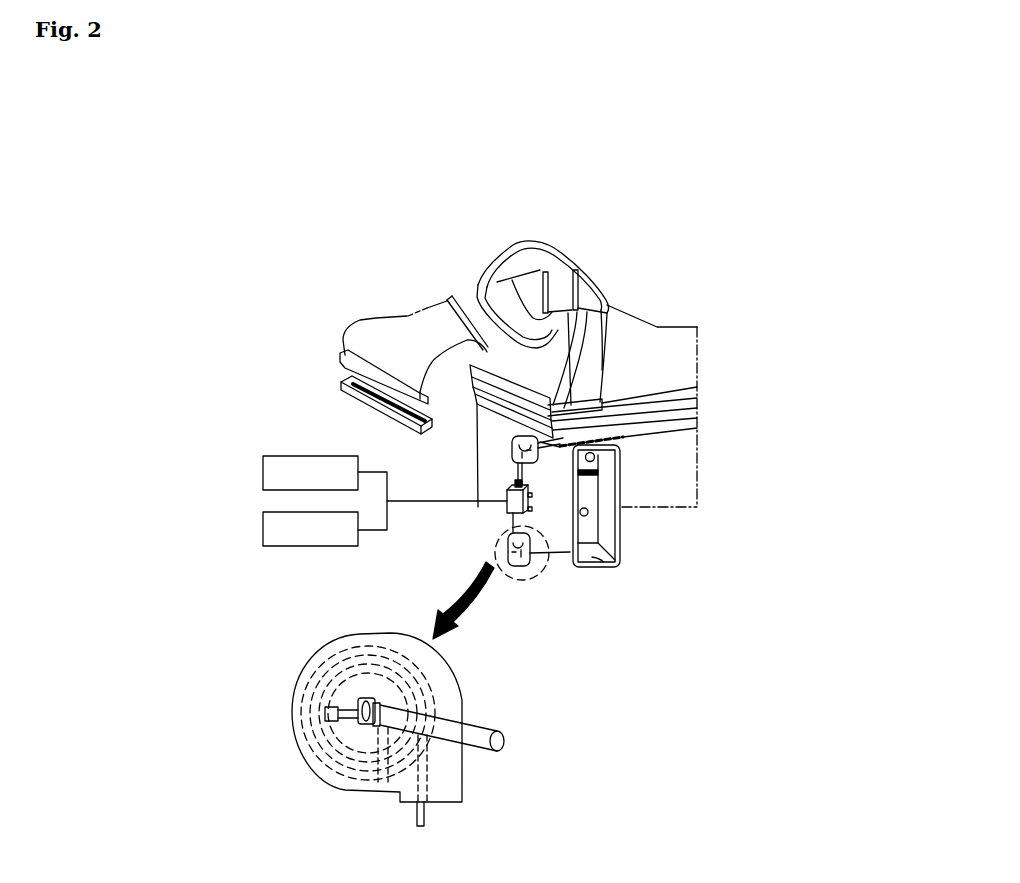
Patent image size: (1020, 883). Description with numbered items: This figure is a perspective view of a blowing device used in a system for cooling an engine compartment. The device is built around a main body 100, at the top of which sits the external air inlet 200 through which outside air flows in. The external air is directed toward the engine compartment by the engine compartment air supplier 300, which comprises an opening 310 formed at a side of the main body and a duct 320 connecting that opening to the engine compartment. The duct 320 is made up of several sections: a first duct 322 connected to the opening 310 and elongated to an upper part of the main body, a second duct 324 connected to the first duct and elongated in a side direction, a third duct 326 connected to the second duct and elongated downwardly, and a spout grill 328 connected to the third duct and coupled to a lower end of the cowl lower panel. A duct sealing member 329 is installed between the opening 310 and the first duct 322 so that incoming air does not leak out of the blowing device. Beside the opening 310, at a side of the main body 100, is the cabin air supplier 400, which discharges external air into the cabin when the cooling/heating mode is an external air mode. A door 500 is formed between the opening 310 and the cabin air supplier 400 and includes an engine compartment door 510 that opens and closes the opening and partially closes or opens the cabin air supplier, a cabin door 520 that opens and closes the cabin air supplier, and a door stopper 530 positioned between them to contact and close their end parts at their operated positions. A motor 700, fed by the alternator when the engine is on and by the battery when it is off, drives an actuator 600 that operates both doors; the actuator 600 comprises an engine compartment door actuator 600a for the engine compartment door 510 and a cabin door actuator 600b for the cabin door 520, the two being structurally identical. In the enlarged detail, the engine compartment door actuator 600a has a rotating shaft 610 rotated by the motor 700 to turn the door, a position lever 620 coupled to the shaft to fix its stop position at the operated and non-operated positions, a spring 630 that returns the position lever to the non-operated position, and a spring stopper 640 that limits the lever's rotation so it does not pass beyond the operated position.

The main body 100 is at (700, 372).
The external air inlet 200 is at (506, 268).
The engine compartment air supplier 300 is at (647, 140).
The opening 310 is at (624, 447).
The duct 320 is at (615, 187).
The first duct 322 is at (606, 300).
The second duct 324 is at (522, 282).
The third duct 326 is at (408, 316).
The spout grill 328 is at (345, 336).
The duct sealing member 329 is at (566, 305).
The cabin air supplier 400 is at (592, 556).
The door 500 is at (762, 448).
The engine compartment door 510 is at (598, 456).
The cabin door 520 is at (591, 529).
The door stopper 530 is at (598, 473).
The actuator 600 is at (502, 616).
The engine compartment door actuator 600a is at (530, 463).
The cabin door actuator 600b is at (515, 566).
The rotating shaft 610 is at (474, 730).
The position lever 620 is at (350, 722).
The spring 630 is at (366, 700).
The spring stopper 640 is at (325, 711).
The motor 700 is at (507, 485).